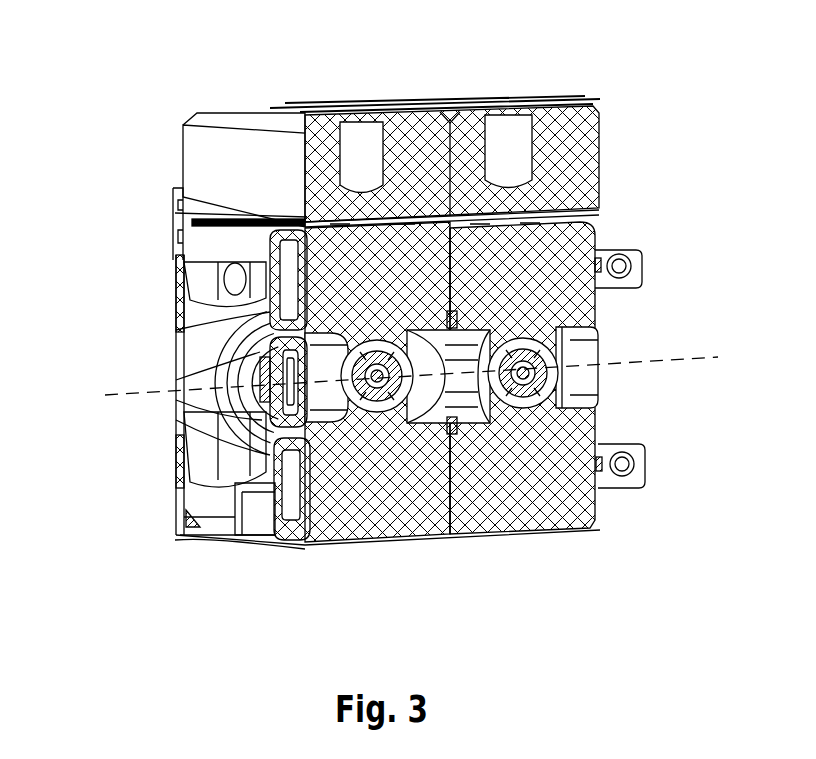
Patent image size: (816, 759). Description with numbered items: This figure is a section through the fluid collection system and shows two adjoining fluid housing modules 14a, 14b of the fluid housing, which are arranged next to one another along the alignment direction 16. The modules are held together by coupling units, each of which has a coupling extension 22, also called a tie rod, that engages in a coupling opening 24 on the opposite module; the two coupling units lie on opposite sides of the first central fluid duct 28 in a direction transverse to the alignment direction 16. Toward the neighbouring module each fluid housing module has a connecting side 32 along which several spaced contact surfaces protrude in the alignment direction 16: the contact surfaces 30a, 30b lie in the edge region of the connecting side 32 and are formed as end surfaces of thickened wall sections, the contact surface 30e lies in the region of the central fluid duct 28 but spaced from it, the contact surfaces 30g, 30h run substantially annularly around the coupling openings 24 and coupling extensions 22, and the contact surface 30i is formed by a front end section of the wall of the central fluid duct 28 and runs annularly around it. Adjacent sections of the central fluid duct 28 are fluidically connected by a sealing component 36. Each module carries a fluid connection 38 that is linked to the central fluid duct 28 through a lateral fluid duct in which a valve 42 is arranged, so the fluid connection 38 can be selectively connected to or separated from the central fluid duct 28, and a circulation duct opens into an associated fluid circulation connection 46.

The fluid housing module 14a is at (613, 530).
The fluid housing module 14b is at (328, 543).
The alignment direction 16 is at (686, 360).
The coupling extension 22 is at (623, 240).
The coupling opening 24 is at (305, 225).
The first central fluid duct 28 is at (200, 458).
The contact surface 30a is at (176, 268).
The contact surface 30b is at (165, 466).
The contact surface 30e is at (200, 430).
The contact surface 30g is at (175, 222).
The contact surface 30h is at (283, 540).
The contact surface 30i is at (180, 318).
The connecting side 32 is at (178, 537).
The sealing component 36 is at (178, 351).
The fluid connection 38 is at (298, 113).
The valve 42 is at (553, 390).
The fluid circulation connection 46 is at (470, 113).